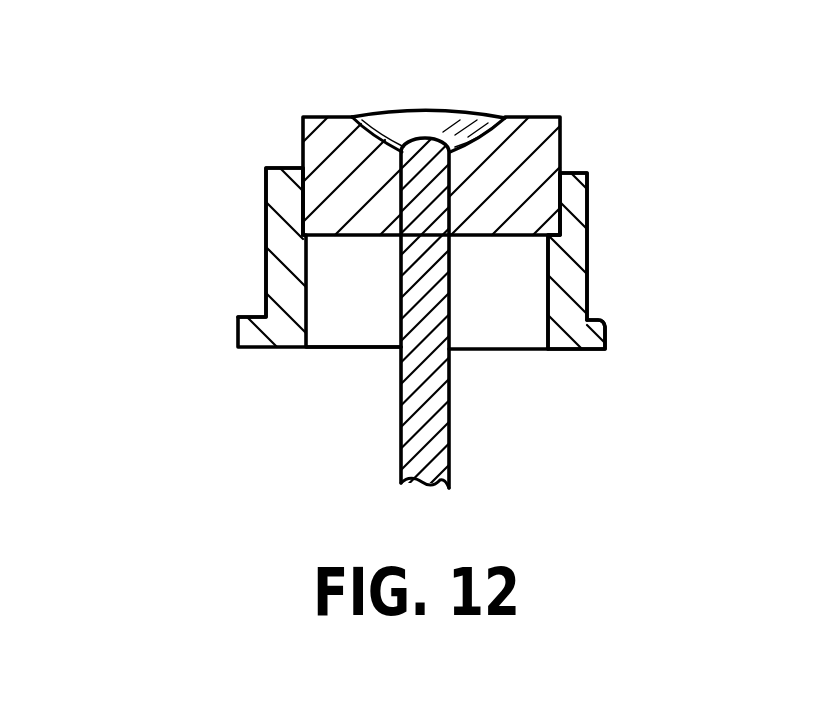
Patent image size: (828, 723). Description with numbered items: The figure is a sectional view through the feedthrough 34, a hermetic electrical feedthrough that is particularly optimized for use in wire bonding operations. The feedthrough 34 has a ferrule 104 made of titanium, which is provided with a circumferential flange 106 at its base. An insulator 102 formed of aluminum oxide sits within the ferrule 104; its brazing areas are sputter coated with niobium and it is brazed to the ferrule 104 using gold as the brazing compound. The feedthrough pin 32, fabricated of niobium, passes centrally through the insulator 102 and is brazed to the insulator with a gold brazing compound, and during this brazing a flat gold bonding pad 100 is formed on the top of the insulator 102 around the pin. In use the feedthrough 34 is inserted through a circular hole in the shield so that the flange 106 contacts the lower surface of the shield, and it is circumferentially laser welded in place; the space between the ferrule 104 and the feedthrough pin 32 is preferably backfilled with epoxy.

The feedthrough pin 32 is at (397, 398).
The feedthrough 34 is at (153, 222).
The gold bonding pad 100 is at (452, 107).
The insulator 102 is at (545, 140).
The ferrule 104 is at (578, 243).
The circumferential flange 106 is at (592, 323).